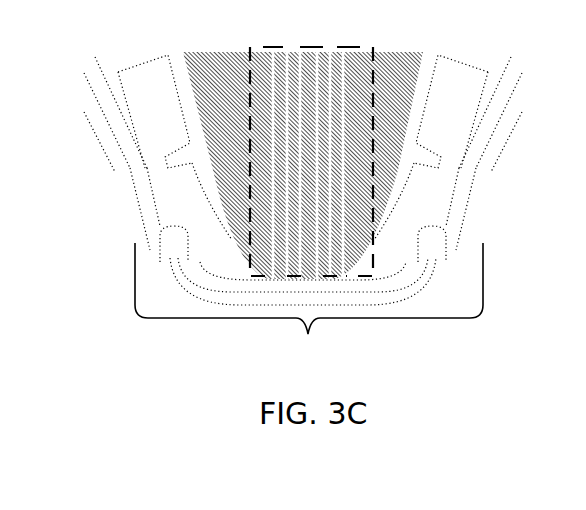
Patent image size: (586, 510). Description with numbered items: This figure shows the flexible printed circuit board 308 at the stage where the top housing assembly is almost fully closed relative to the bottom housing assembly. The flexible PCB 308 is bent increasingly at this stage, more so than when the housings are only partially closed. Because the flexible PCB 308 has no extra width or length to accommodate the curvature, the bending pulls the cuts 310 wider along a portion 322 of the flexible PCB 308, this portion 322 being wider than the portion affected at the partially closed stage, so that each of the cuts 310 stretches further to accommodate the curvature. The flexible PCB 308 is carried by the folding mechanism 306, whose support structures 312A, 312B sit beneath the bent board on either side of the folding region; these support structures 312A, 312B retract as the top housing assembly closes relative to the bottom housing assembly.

The folding mechanism 306 is at (309, 305).
The flexible printed circuit board 308 is at (408, 58).
The cuts 310 is at (316, 148).
The support structure 312A is at (231, 241).
The support structure 312B is at (383, 246).
The portion 322 is at (283, 46).